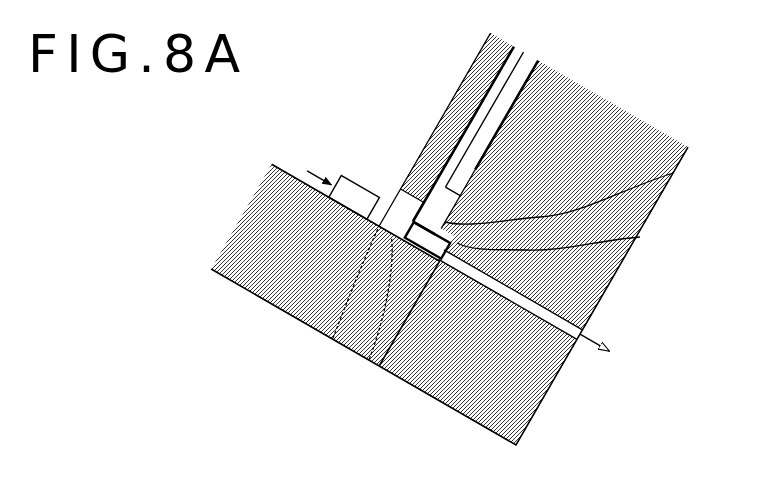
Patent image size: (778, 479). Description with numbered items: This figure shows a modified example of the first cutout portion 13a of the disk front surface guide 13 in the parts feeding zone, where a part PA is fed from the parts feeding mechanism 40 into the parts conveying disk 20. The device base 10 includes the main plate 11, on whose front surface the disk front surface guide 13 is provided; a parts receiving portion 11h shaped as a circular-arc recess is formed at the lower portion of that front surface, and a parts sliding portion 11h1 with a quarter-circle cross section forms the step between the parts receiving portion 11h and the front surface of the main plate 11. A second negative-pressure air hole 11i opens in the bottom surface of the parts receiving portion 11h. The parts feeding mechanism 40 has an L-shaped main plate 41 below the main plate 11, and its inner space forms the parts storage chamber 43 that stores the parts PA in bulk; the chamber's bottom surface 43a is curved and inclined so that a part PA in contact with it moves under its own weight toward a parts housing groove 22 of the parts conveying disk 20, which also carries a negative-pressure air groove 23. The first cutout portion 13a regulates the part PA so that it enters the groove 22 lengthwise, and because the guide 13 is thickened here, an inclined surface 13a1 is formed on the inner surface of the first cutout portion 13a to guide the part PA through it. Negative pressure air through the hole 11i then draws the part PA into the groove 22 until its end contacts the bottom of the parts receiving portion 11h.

The device base 10 is at (540, 229).
The main plate 11 is at (580, 93).
The parts receiving portion 11h is at (641, 238).
The parts sliding portion 11h1 is at (668, 181).
The second negative-pressure air hole 11i is at (578, 347).
The disk front surface guide 13 is at (482, 66).
The first cutout portion 13a is at (333, 338).
The inclined surface 13a1 is at (370, 358).
The parts conveying disk 20 is at (527, 48).
The parts housing groove 22 is at (423, 183).
The negative-pressure air groove 23 is at (490, 125).
The parts feeding mechanism 40 is at (299, 250).
The main plate 41 is at (232, 240).
The parts storage chamber 43 is at (434, 132).
The bottom surface 43a is at (290, 165).
The part PA is at (356, 178).